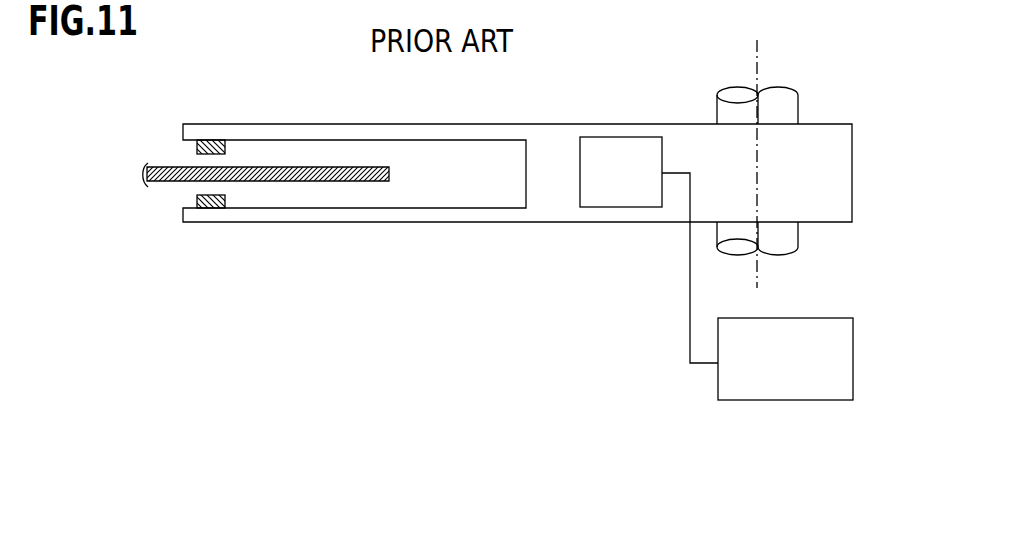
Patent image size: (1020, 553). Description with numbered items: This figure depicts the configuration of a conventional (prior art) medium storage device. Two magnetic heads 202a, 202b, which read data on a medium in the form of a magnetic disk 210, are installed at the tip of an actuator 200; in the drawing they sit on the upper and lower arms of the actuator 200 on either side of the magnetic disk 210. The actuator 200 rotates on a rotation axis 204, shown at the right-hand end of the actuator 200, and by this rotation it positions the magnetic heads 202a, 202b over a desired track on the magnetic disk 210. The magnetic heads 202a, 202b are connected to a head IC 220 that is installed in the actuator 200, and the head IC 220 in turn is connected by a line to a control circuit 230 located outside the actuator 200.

The actuator 200 is at (498, 131).
The magnetic head 202a is at (198, 146).
The magnetic head 202b is at (198, 199).
The rotation axis 204 is at (775, 97).
The medium (magnetic disk) 210 is at (152, 185).
The head IC 220 is at (602, 196).
The control circuit 230 is at (785, 386).